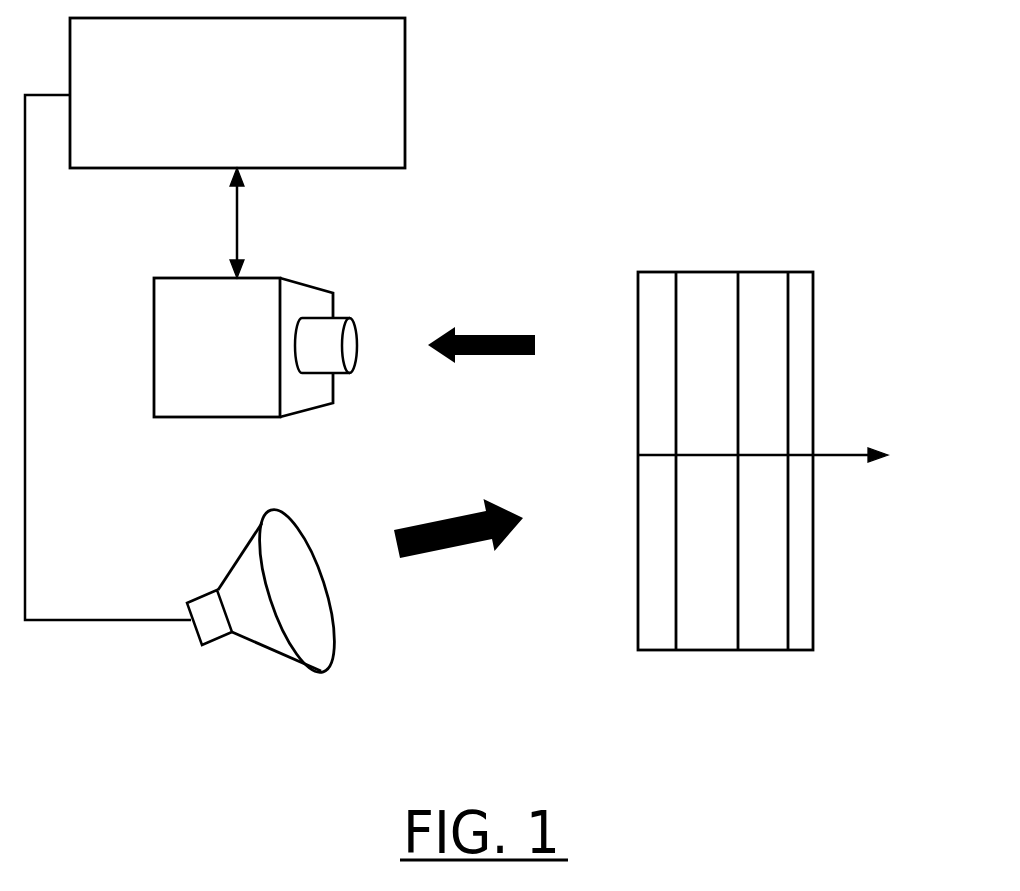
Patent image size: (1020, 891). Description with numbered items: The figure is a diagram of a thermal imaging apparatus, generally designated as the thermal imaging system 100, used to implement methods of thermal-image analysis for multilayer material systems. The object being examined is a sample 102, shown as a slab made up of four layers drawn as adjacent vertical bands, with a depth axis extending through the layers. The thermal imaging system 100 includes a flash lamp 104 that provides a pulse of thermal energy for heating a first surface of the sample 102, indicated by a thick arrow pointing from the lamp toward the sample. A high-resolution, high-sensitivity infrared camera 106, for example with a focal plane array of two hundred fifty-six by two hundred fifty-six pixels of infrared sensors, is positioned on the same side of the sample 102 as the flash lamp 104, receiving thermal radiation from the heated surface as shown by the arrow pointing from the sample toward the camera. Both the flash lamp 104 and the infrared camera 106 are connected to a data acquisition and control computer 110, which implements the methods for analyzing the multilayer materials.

The thermal imaging system 100 is at (603, 69).
The data acquisition and control computer 110 is at (237, 93).
The infrared camera 106 is at (255, 389).
The flash lamp 104 is at (256, 620).
The sample 102 is at (763, 472).